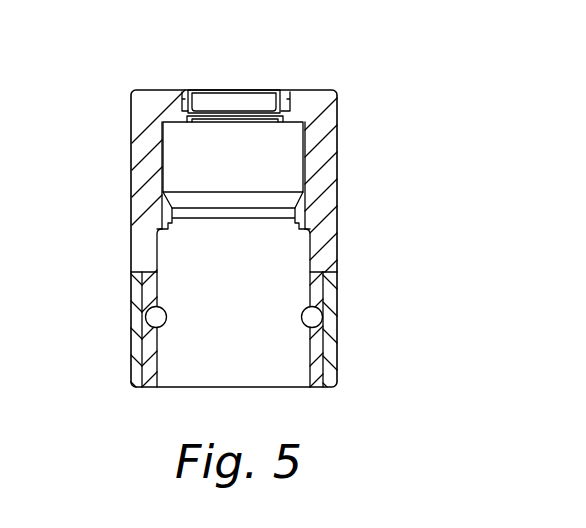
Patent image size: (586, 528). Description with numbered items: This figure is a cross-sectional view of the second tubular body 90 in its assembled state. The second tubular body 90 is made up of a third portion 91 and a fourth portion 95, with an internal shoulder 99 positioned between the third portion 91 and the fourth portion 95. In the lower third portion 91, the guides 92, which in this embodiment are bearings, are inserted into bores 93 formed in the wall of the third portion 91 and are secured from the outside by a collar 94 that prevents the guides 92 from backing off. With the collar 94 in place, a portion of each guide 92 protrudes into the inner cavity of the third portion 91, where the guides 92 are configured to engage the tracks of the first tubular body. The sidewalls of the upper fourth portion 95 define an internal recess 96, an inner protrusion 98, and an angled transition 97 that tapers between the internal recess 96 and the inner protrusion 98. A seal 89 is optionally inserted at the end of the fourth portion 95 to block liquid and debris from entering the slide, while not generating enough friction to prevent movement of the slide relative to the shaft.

The seal 89 is at (221, 96).
The second tubular body 90 is at (398, 73).
The third portion 91 is at (347, 243).
The guide 92 is at (148, 313).
The bore 93 is at (150, 297).
The collar 94 is at (137, 372).
The fourth portion 95 is at (117, 92).
The internal recess 96 is at (272, 152).
The angled transition 97 is at (308, 203).
The inner protrusion 98 is at (304, 221).
The internal shoulder 99 is at (305, 236).